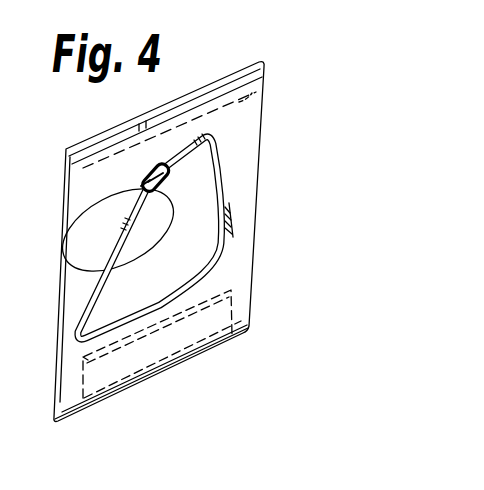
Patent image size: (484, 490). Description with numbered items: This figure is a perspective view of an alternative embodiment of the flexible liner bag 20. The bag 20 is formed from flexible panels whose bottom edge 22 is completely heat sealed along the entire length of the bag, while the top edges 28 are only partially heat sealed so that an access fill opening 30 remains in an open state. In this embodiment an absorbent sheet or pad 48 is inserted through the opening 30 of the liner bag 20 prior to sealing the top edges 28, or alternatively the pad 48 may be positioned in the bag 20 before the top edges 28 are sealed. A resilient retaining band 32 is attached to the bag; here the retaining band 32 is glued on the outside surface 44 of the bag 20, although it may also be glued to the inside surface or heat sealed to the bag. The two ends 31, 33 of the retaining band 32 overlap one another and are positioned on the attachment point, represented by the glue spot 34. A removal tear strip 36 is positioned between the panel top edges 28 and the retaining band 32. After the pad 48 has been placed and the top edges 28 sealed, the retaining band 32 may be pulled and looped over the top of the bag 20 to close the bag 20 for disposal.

The flexible liner bag 20 is at (174, 222).
The bottom edge 22 is at (173, 366).
The top edge 28 is at (228, 78).
The access fill opening 30 is at (170, 103).
The end of retaining band 31 is at (141, 185).
The resilient retaining band 32 is at (156, 236).
The end of retaining band 33 is at (113, 263).
The glue spot 34 is at (152, 172).
The removal tear strip 36 is at (265, 88).
The outside surface 44 is at (247, 276).
The absorbent sheet or pad 48 is at (225, 320).